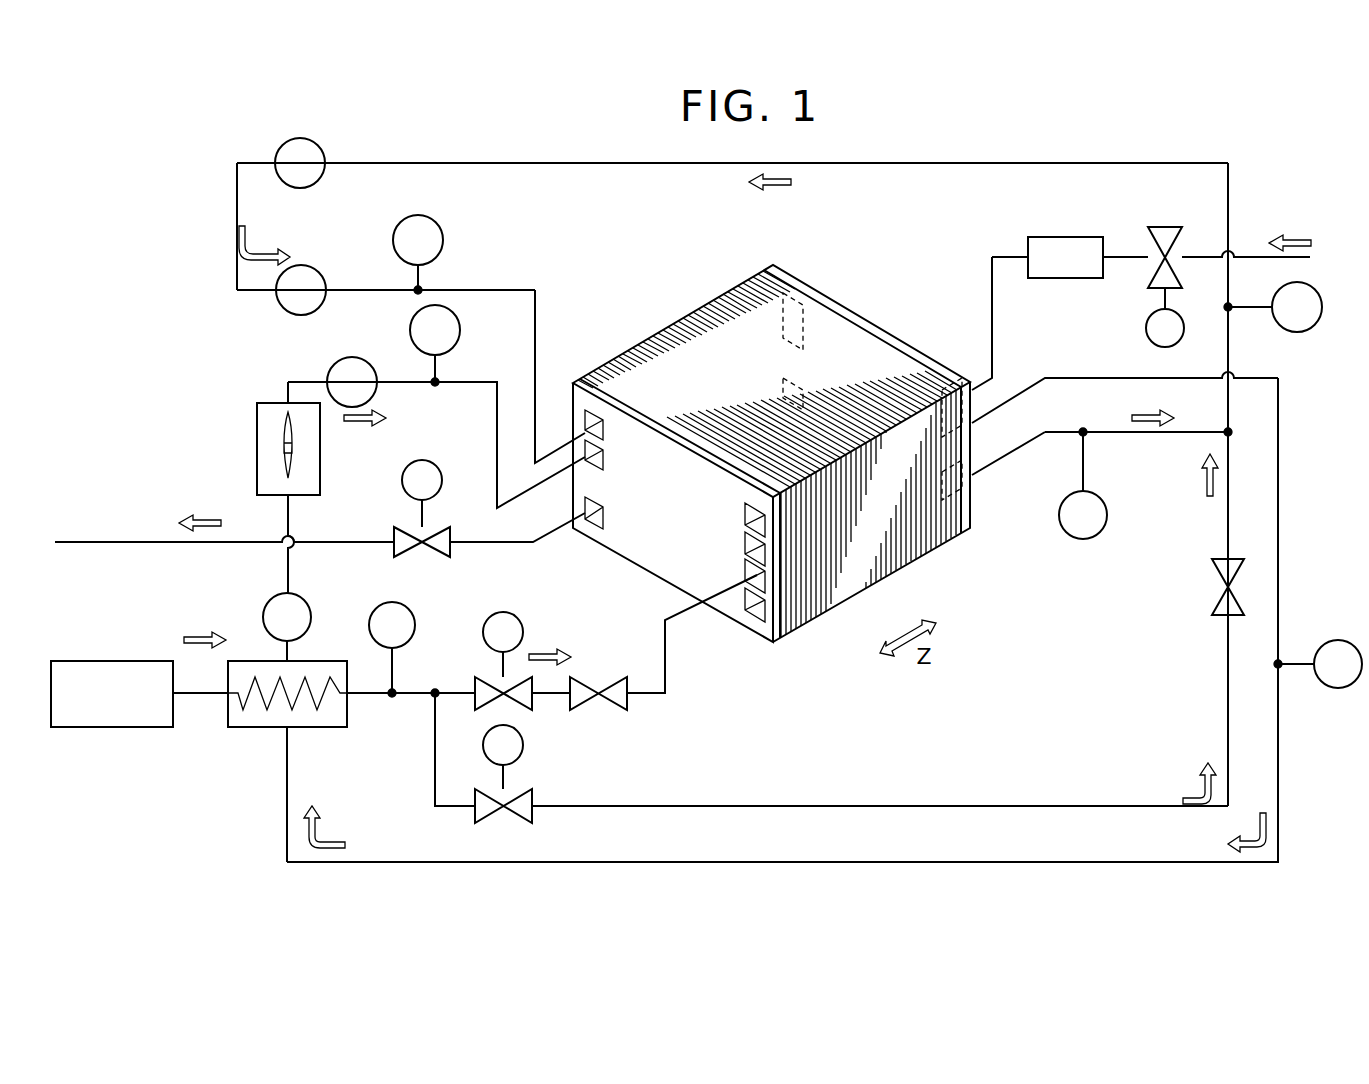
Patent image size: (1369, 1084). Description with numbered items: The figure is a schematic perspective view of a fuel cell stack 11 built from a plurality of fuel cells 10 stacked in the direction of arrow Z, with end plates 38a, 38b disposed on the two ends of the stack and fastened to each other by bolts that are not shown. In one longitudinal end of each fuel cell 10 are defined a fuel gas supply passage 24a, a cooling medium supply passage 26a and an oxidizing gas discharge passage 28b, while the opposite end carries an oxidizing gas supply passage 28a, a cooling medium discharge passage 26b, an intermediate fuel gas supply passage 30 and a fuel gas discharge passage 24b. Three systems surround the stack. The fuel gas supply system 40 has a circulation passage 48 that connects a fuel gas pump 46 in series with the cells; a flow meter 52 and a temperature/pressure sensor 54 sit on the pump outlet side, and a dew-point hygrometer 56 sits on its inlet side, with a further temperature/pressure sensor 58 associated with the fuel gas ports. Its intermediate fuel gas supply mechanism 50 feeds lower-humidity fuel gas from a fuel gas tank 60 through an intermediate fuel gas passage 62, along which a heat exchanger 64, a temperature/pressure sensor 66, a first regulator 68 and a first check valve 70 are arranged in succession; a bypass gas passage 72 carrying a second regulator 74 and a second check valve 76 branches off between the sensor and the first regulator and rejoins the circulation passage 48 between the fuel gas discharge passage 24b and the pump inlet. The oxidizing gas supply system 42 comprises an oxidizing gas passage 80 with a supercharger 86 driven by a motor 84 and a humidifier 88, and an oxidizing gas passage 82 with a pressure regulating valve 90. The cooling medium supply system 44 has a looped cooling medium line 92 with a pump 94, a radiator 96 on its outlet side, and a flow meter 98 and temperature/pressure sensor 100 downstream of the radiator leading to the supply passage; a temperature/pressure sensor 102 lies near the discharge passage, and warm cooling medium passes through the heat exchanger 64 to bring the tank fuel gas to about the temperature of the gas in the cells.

The fuel cell 10 is at (711, 284).
The fuel cell stack 11 is at (881, 263).
The fuel gas supply passage 24a is at (604, 426).
The fuel gas discharge passage 24b is at (748, 606).
The cooling medium supply passage 26a is at (604, 458).
The cooling medium discharge passage 26b is at (745, 545).
The oxidizing gas supply passage 28a is at (745, 512).
The oxidizing gas discharge passage 28b is at (592, 524).
The intermediate fuel gas supply passage 30 is at (745, 574).
The end plate 38a is at (596, 392).
The end plate 38b is at (792, 280).
The fuel gas supply system 40 is at (553, 141).
The oxidizing gas supply system 42 is at (1002, 234).
The cooling medium supply system 44 is at (606, 877).
The fuel gas pump 46 is at (322, 152).
The circulation passage 48 is at (945, 163).
The intermediate fuel gas supply mechanism 50 is at (399, 752).
The flow meter 52 is at (318, 272).
The temperature/pressure sensor 54 is at (444, 240).
The dew-point hygrometer 56 is at (1300, 333).
The temperature/pressure sensor 58 is at (1075, 538).
The fuel gas tank 60 is at (113, 661).
The intermediate fuel gas passage 62 is at (200, 693).
The heat exchanger 64 is at (326, 661).
The temperature/pressure sensor 66 is at (412, 612).
The first regulator 68 is at (517, 618).
The first check valve 70 is at (598, 676).
The bypass gas passage 72 is at (910, 806).
The second regulator 74 is at (523, 745).
The second check valve 76 is at (1212, 587).
The oxidizing gas passage 80 is at (1256, 257).
The oxidizing gas passage 82 is at (130, 540).
The motor 84 is at (1146, 328).
The supercharger 86 is at (1170, 227).
The humidifier 88 is at (1063, 237).
The pressure regulating valve 90 is at (432, 462).
The cooling medium line 92 is at (820, 862).
The pump 94 is at (268, 602).
The radiator 96 is at (270, 403).
The flow meter 98 is at (355, 358).
The temperature/pressure sensor 100 is at (461, 330).
The temperature/pressure sensor 102 is at (1335, 640).